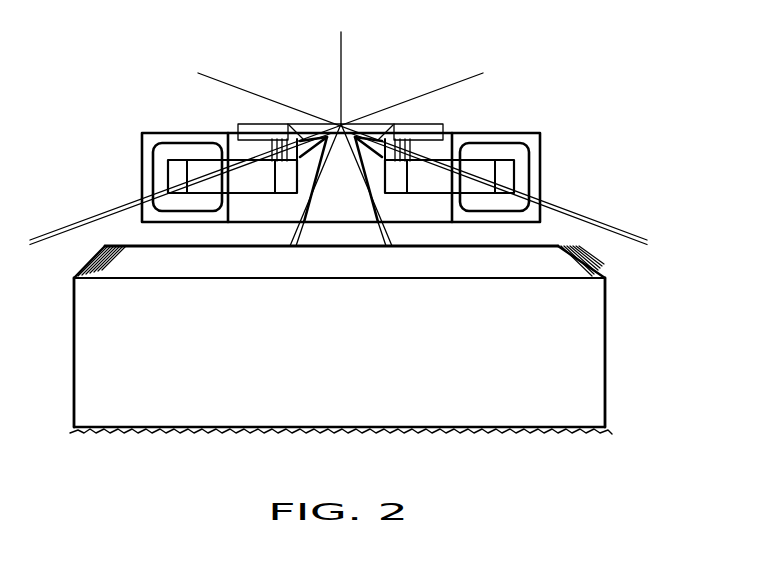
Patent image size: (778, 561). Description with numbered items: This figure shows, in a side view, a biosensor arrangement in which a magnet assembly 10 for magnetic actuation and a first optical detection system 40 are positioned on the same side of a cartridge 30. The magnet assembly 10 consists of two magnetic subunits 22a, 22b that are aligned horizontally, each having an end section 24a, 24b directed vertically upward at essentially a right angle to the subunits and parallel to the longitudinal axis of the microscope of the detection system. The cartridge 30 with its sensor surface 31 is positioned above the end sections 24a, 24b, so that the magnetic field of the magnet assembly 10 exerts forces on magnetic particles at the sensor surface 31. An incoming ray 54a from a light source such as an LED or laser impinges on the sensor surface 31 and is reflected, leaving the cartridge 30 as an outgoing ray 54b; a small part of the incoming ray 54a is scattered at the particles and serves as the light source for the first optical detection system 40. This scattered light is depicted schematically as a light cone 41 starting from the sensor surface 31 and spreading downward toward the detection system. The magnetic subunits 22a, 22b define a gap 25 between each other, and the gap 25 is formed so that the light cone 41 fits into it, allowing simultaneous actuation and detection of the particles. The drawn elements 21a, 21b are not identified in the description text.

The magnet assembly 10 is at (616, 104).
The first laser light source 21a is at (160, 153).
The second laser light source 21b is at (523, 152).
The magnetic subunit 22a is at (203, 167).
The magnetic subunit 22b is at (480, 167).
The end section 24a is at (310, 155).
The end section 24b is at (373, 155).
The gap 25 is at (358, 205).
The cartridge 30 is at (262, 124).
The sensor surface 31 is at (346, 120).
The first optical detection system 40 is at (590, 360).
The light cone 41 is at (314, 232).
The incoming ray 54a is at (55, 226).
The outgoing ray 54b is at (628, 228).